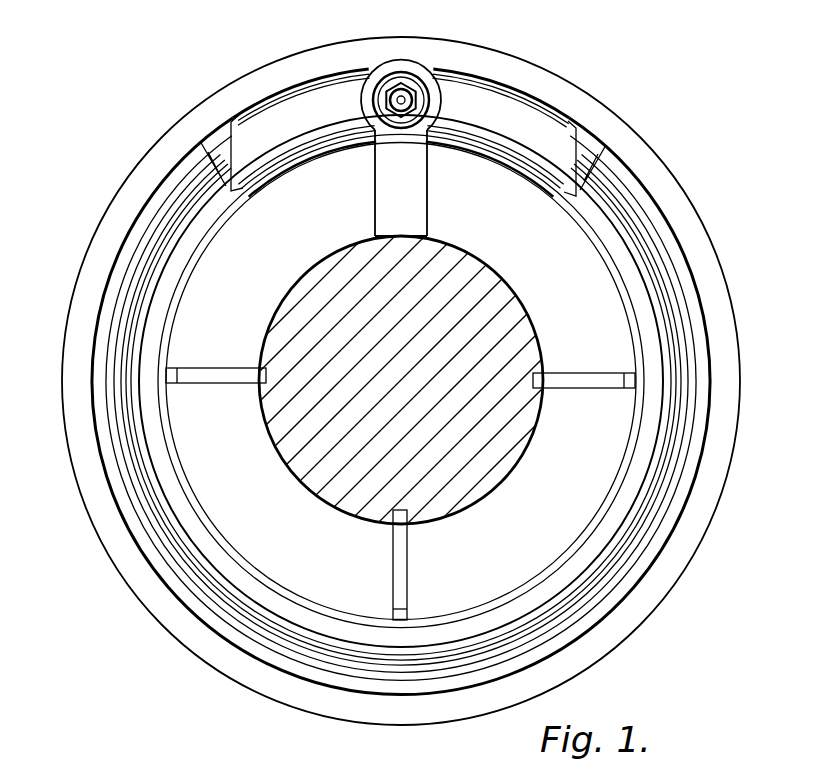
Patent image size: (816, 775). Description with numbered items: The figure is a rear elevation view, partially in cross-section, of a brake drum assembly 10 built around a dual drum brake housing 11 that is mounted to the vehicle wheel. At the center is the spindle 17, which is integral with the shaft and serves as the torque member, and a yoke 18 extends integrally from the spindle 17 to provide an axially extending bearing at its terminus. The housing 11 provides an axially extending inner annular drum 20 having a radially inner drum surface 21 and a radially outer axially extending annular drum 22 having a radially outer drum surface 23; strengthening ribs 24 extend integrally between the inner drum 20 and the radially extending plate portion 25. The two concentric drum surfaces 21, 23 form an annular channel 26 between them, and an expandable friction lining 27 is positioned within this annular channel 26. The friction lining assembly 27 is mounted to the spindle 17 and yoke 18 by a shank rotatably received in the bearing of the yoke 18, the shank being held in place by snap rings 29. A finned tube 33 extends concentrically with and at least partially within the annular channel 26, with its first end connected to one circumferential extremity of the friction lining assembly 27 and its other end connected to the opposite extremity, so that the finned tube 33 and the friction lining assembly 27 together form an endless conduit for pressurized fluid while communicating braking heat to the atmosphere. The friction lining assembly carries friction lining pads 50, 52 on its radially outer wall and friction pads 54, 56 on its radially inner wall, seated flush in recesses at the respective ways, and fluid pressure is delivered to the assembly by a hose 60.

The brake drum assembly 10 is at (219, 68).
The dual drum brake housing 11 is at (140, 155).
The spindle 17 is at (500, 306).
The yoke 18 is at (378, 214).
The inner annular drum 20 is at (216, 233).
The radially inner drum surface 21 is at (190, 266).
The outer annular drum 22 is at (126, 190).
The radially outer drum surface 23 is at (136, 230).
The strengthening ribs 24 is at (220, 383).
The radially extending plate portion 25 is at (530, 545).
The annular channel 26 is at (667, 232).
The expandable friction lining 27 is at (582, 140).
The snap rings 29 is at (410, 126).
The finned tube 33 is at (672, 281).
The friction lining pad 50 is at (286, 88).
The friction lining pad 52 is at (534, 100).
The friction pad 54 is at (289, 160).
The friction pad 56 is at (518, 176).
The hose 60 is at (410, 101).